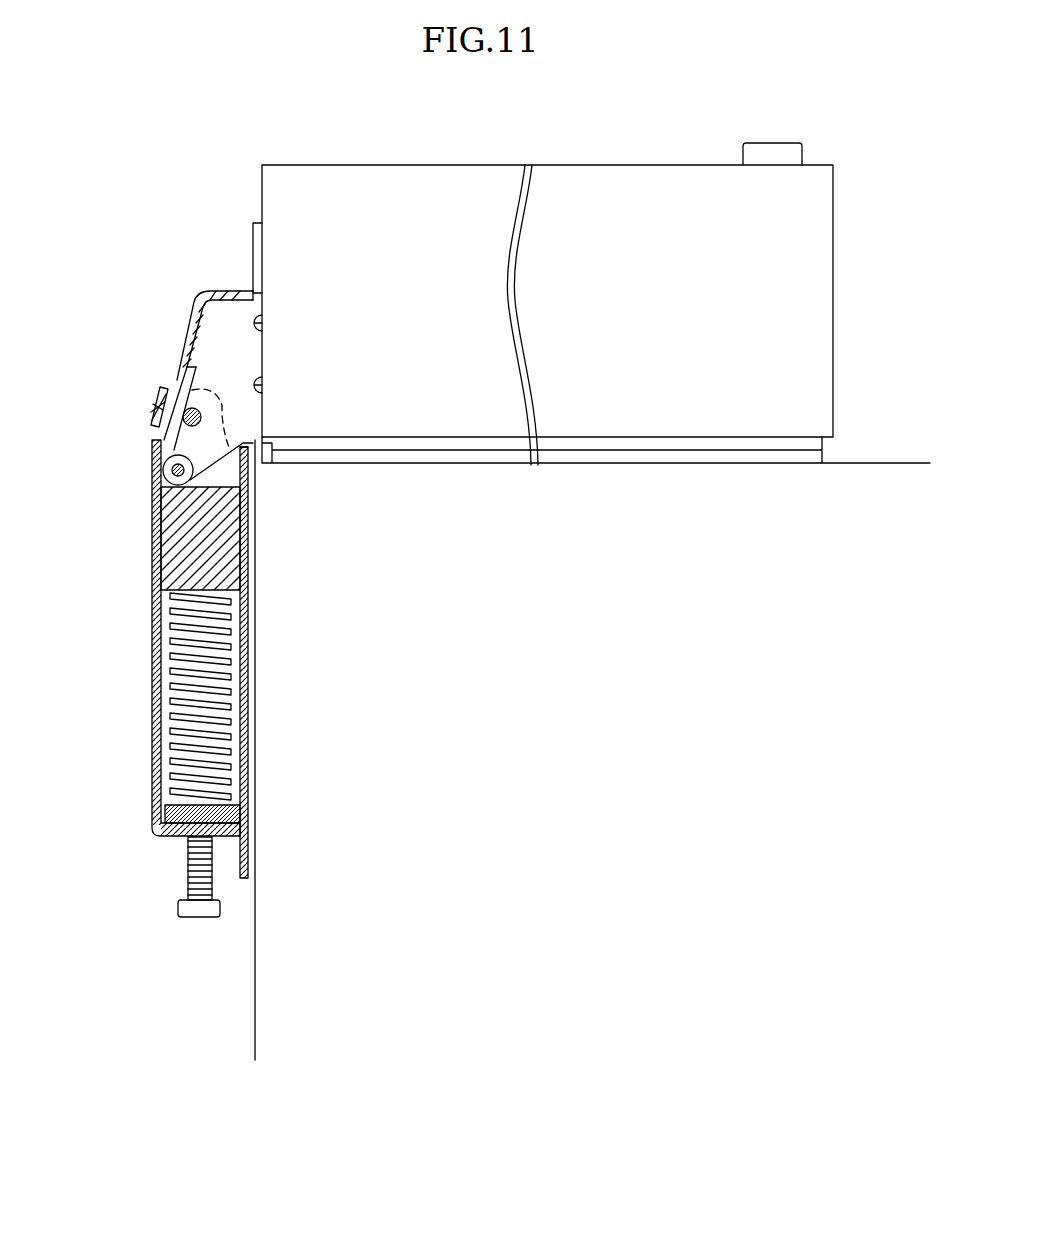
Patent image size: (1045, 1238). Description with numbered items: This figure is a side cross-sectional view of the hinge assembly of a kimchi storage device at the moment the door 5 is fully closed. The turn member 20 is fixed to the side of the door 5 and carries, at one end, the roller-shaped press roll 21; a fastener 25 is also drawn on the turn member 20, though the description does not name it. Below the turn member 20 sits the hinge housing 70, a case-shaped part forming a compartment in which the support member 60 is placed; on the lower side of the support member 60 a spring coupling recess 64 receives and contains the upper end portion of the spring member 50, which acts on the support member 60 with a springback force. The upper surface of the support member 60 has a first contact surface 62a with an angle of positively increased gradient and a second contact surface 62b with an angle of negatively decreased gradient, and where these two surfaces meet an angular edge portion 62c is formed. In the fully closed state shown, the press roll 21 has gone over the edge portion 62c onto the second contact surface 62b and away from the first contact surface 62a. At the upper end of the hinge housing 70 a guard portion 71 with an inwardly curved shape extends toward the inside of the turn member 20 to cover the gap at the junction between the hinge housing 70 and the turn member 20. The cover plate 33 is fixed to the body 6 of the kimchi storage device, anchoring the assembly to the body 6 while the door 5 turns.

The door 5 is at (385, 178).
The body 6 is at (891, 472).
The turn member 20 is at (186, 344).
The press roll 21 is at (165, 447).
The screw 25 is at (185, 403).
The cover plate 33 is at (246, 882).
The spring member 50 is at (170, 706).
The support member 60 is at (164, 522).
The first contact surface 62a is at (240, 490).
The second contact surface 62b is at (163, 482).
The edge portion 62c is at (200, 472).
The spring coupling recess 64 is at (166, 633).
The hinge housing 70 is at (152, 574).
The guard portion 71 is at (157, 400).